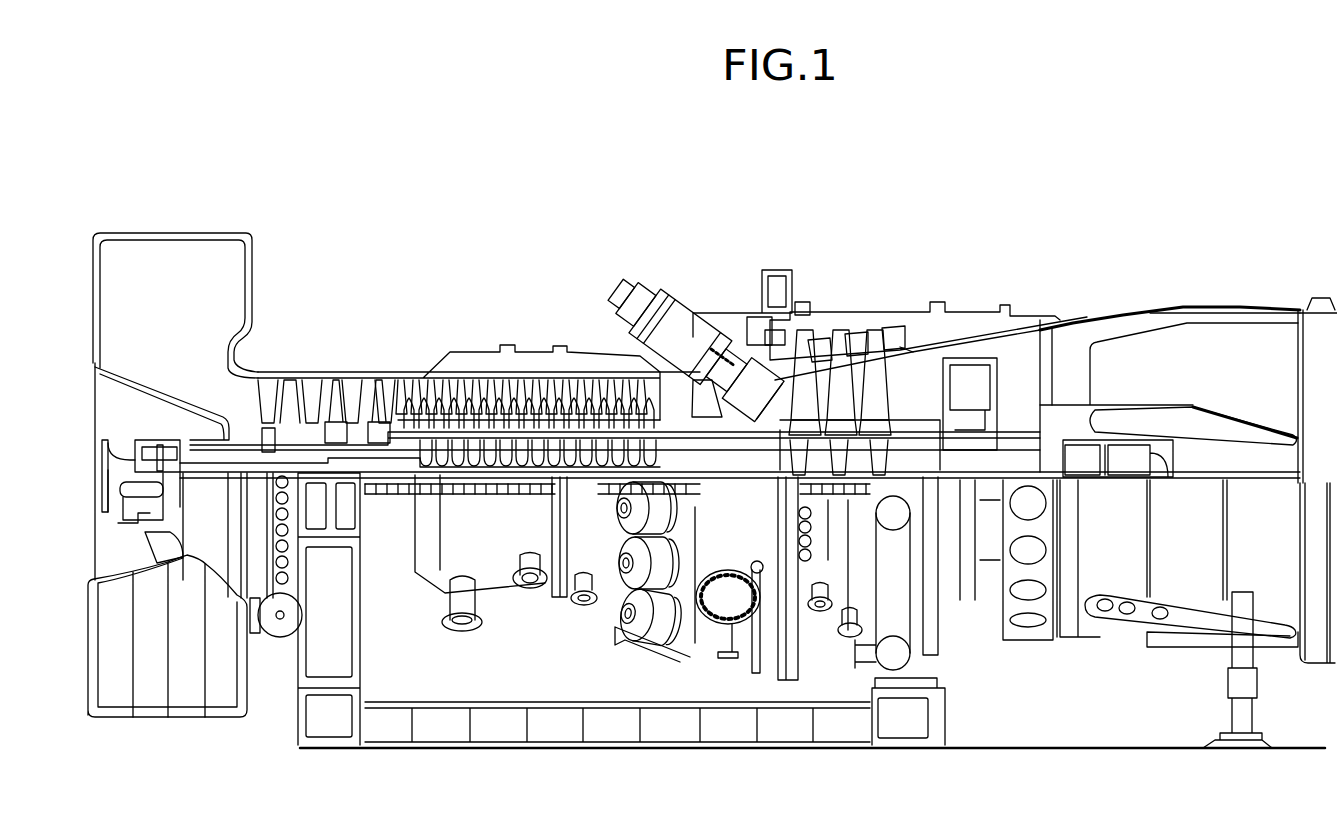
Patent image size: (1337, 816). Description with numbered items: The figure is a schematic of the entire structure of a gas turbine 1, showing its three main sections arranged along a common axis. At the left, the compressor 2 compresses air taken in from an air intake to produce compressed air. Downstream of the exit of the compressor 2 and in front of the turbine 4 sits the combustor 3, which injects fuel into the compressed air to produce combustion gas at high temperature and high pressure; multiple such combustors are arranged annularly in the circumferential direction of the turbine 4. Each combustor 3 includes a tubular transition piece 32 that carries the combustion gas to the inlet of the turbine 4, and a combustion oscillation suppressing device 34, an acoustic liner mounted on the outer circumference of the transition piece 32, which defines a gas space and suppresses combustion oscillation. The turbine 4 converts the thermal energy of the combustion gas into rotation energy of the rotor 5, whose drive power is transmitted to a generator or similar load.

The gas turbine 1 is at (1075, 150).
The compressor 2 is at (383, 370).
The combustor 3 is at (706, 302).
The transition piece 32 is at (770, 345).
The combustion oscillation suppressing device 34 is at (718, 340).
The turbine 4 is at (889, 302).
The rotor 5 is at (1012, 450).